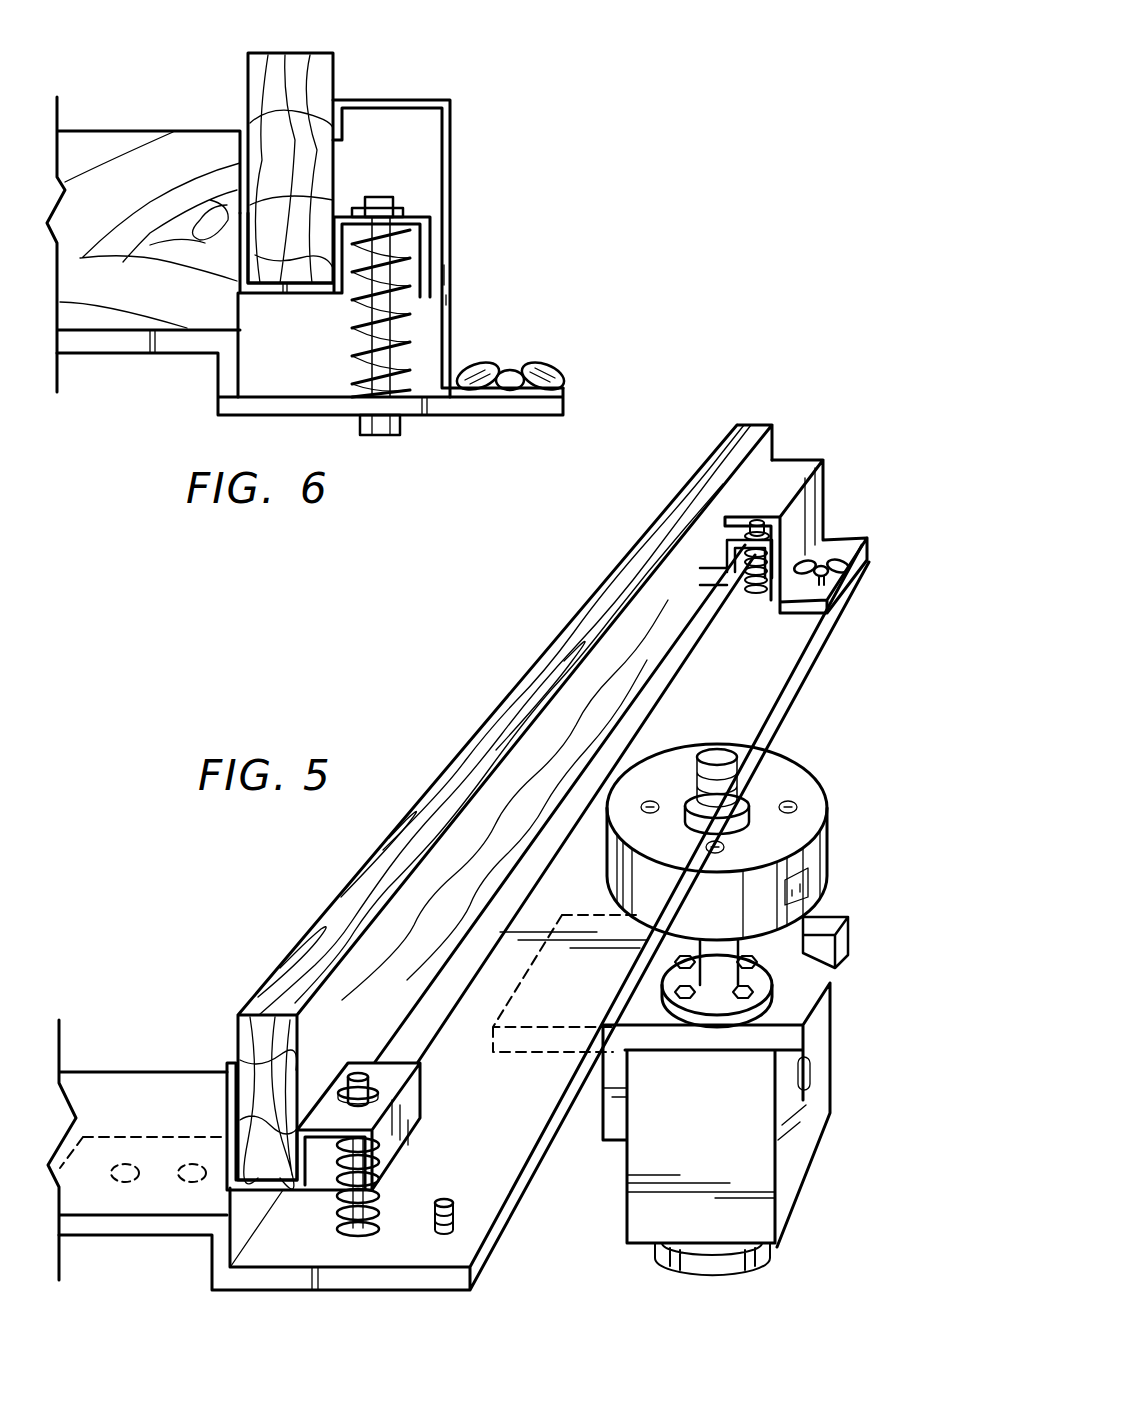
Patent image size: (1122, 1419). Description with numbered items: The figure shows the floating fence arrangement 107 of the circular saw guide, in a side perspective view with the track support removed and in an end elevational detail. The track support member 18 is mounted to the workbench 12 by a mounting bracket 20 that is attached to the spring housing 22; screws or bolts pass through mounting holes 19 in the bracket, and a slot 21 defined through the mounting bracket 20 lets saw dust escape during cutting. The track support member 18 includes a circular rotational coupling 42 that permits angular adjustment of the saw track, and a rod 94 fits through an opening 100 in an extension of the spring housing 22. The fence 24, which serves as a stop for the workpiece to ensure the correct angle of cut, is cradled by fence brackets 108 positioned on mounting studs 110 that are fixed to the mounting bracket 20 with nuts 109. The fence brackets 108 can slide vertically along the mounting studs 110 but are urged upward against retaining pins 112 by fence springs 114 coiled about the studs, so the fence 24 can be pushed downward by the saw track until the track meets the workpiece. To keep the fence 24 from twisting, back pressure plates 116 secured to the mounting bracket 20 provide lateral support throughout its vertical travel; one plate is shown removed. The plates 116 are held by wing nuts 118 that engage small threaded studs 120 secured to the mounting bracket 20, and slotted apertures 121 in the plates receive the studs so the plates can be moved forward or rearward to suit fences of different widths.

In FIG. 6, the workbench 12 is at (100, 130).
In FIG. 5, the workbench 12 is at (125, 1076).
In FIG. 5, the track support member 18 is at (597, 1262).
In FIG. 5, the mounting holes 19 is at (186, 1166).
In FIG. 6, the mounting bracket 20 is at (468, 410).
In FIG. 5, the mounting bracket 20 is at (505, 1236).
In FIG. 5, the slot 21 is at (418, 1028).
In FIG. 5, the spring housing 22 is at (798, 1192).
In FIG. 6, the fence 24 is at (300, 60).
In FIG. 5, the fence 24 is at (338, 908).
In FIG. 5, the circular rotational coupling 42 is at (844, 782).
In FIG. 5, the rod 94 is at (778, 950).
In FIG. 5, the opening 100 is at (822, 948).
In FIG. 6, the floating fence arrangement 107 is at (545, 86).
In FIG. 5, the floating fence arrangement 107 is at (424, 730).
In FIG. 6, the fence brackets 108 is at (300, 297).
In FIG. 5, the fence brackets 108 is at (385, 1150).
In FIG. 6, the nuts 109 is at (396, 437).
In FIG. 6, the mounting studs 110 is at (383, 200).
In FIG. 5, the mounting studs 110 is at (372, 1104).
In FIG. 6, the retaining pins 112 is at (404, 208).
In FIG. 5, the retaining pins 112 is at (345, 1098).
In FIG. 6, the fence springs 114 is at (355, 333).
In FIG. 5, the fence springs 114 is at (365, 1236).
In FIG. 6, the back pressure plates 116 is at (452, 156).
In FIG. 5, the back pressure plates 116 is at (826, 506).
In FIG. 6, the wing nuts 118 is at (522, 376).
In FIG. 5, the wing nuts 118 is at (838, 582).
In FIG. 5, the threaded studs 120 is at (454, 1205).
In FIG. 5, the slotted apertures 121 is at (846, 577).